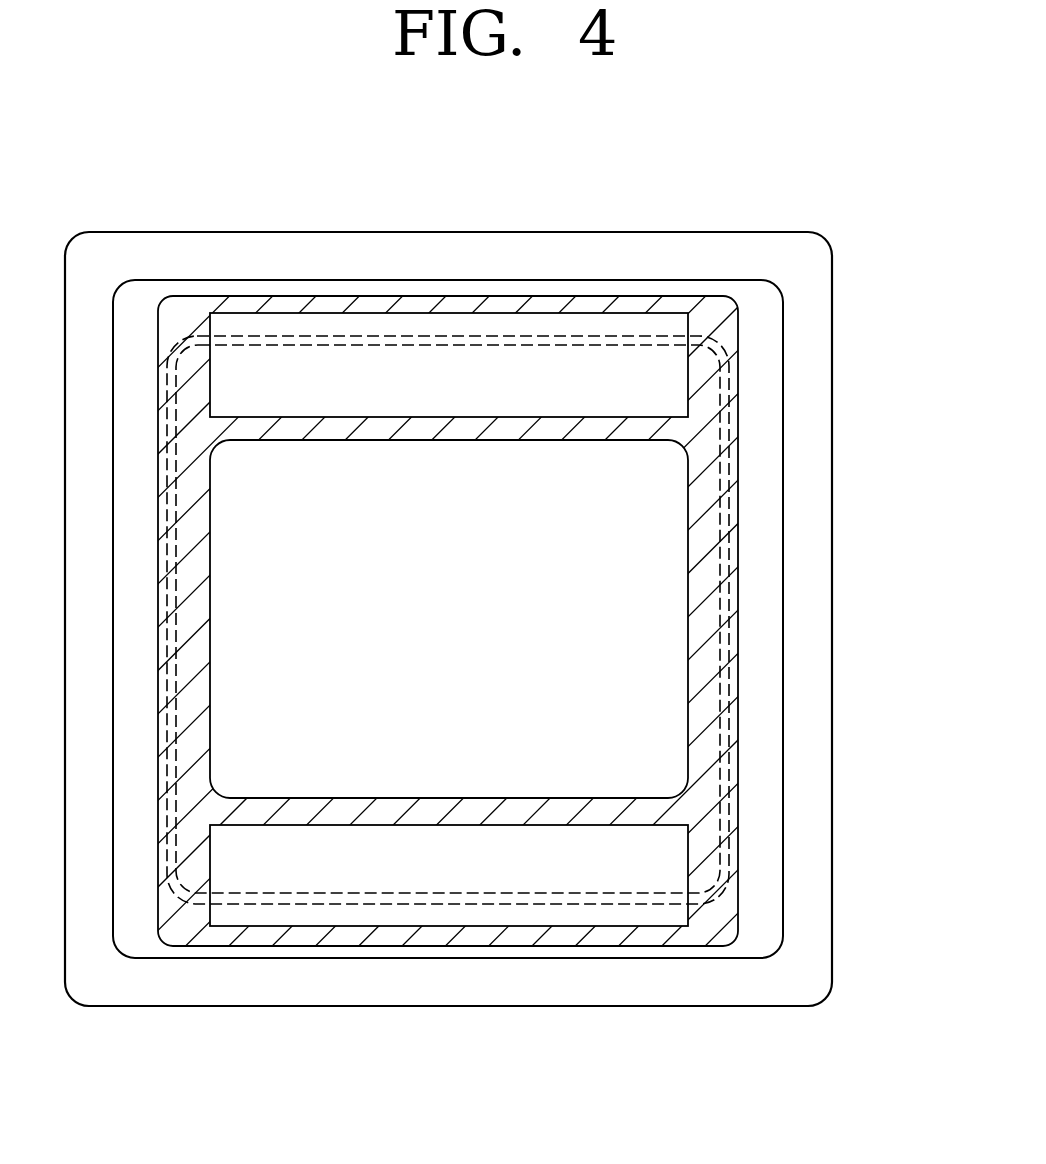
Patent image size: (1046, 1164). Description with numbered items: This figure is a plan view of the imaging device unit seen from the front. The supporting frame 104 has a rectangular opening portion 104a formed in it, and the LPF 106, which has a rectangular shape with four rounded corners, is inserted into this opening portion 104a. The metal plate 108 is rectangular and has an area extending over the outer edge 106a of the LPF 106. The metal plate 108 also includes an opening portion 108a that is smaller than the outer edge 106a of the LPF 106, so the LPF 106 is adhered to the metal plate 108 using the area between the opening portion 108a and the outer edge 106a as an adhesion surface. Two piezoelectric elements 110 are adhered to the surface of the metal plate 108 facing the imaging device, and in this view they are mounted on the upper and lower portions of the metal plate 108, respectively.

The supporting frame 104 is at (292, 992).
The opening portion 104a is at (717, 507).
The LPF 106 is at (729, 544).
The outer edge 106a is at (733, 608).
The metal plate 108 is at (710, 330).
The opening portion 108a is at (688, 673).
The piezoelectric elements 110 is at (447, 330).